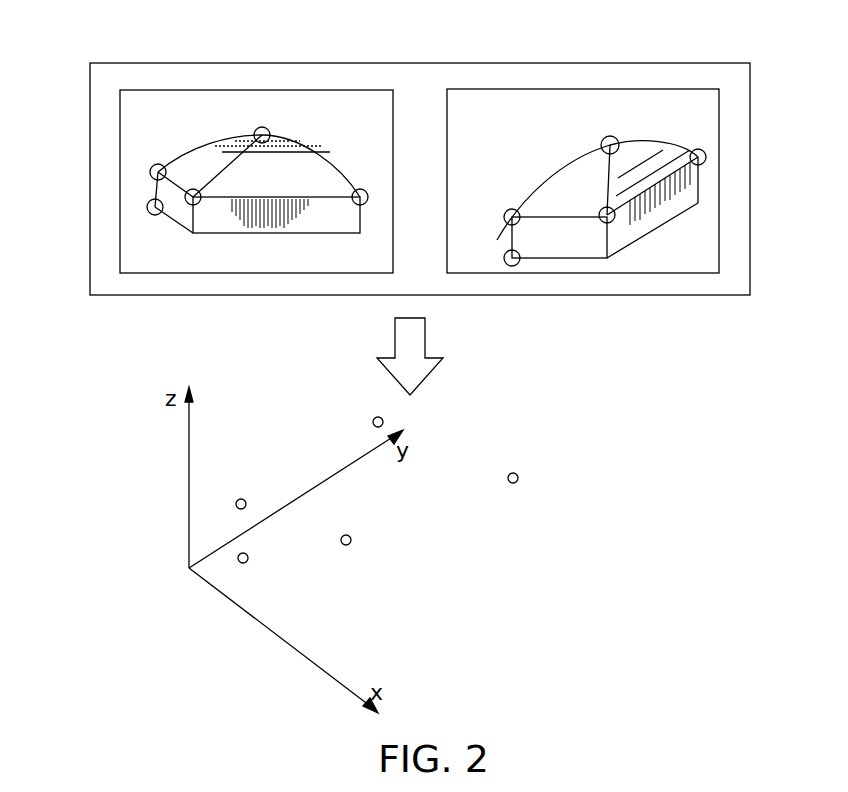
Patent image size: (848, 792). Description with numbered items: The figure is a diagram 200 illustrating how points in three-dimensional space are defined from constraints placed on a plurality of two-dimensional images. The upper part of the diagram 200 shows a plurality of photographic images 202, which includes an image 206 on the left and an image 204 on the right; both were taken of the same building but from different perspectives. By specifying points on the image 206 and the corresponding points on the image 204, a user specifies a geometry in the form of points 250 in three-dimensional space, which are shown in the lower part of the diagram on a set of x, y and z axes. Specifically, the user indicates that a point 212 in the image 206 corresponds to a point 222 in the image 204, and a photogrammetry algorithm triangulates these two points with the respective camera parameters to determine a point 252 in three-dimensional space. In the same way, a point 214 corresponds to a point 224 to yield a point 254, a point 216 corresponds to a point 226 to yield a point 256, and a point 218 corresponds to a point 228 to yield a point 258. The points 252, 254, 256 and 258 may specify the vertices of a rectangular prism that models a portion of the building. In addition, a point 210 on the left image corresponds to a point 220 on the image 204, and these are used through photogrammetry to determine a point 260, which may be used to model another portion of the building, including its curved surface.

The diagram 200 is at (756, 45).
The plurality of photographic images 202 is at (750, 93).
The image 204 is at (719, 125).
The image 206 is at (120, 148).
The point 210 is at (262, 127).
The point 212 is at (150, 175).
The point 214 is at (147, 209).
The point 216 is at (197, 205).
The point 218 is at (360, 205).
The point 220 is at (610, 136).
The point 222 is at (507, 224).
The point 224 is at (515, 266).
The point 226 is at (610, 223).
The point 228 is at (706, 157).
The points in three-dimensional space 250 is at (388, 518).
The point in three-dimensional space 252 is at (241, 498).
The point in three-dimensional space 254 is at (240, 563).
The point in three-dimensional space 256 is at (352, 540).
The point in three-dimensional space 258 is at (507, 478).
The point in three-dimensional space 260 is at (372, 422).